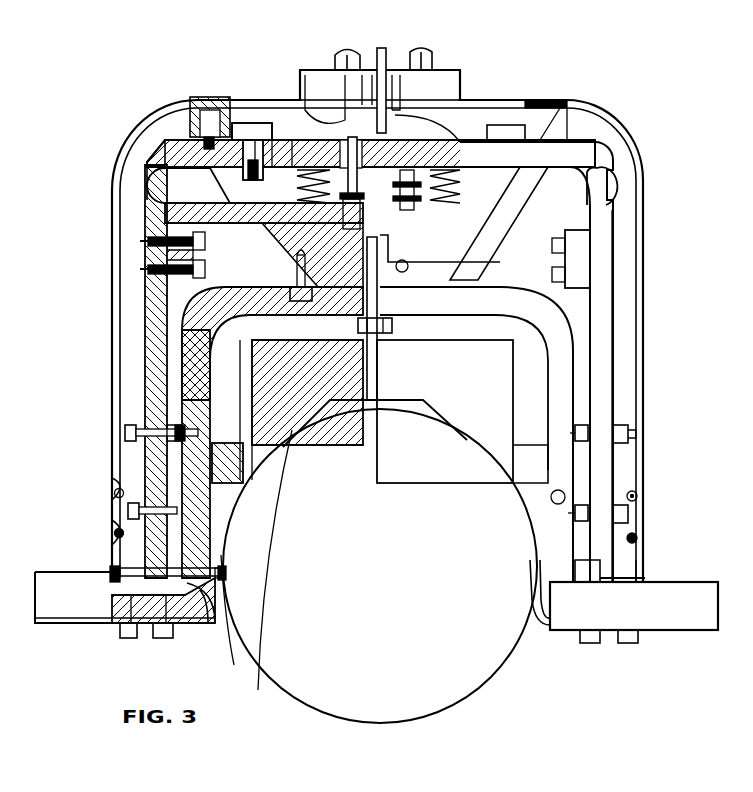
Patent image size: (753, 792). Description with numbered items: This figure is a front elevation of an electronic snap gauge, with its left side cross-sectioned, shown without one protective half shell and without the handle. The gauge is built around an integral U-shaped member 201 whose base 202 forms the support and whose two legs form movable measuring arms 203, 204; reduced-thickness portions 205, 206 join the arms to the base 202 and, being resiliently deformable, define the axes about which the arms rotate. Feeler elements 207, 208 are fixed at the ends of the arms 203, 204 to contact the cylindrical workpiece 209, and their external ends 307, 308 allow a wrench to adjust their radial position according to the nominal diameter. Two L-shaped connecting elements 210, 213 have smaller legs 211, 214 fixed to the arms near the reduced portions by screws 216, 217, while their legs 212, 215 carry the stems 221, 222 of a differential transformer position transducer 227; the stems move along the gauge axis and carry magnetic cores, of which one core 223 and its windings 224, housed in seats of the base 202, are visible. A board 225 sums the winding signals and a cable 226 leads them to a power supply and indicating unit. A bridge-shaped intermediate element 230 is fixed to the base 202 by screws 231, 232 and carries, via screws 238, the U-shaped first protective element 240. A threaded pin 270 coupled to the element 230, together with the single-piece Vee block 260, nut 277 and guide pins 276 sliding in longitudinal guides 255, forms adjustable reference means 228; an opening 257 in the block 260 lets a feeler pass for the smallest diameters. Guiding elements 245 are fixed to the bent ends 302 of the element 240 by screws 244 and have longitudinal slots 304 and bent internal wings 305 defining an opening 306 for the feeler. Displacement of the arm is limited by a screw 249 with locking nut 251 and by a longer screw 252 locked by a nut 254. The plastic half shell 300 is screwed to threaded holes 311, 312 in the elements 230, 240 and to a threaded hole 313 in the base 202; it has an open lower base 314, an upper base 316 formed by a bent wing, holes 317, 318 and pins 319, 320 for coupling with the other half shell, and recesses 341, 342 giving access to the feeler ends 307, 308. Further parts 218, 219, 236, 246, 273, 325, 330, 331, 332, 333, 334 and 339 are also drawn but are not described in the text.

The integral member 201 is at (585, 118).
The base 202 is at (525, 155).
The movable measuring arm 203 is at (145, 300).
The movable measuring arm 204 is at (600, 262).
The reduced thickness portion 205 is at (178, 200).
The reduced thickness portion 206 is at (613, 180).
The feeler element 207 is at (234, 665).
The feeler element 208 is at (600, 570).
The workpiece 209 is at (486, 658).
The connecting element 210 is at (147, 138).
The smaller leg 211 is at (150, 250).
The leg 212 is at (153, 158).
The connecting element 213 is at (580, 160).
The smaller leg 214 is at (578, 248).
The leg 215 is at (555, 140).
The screws 216 is at (205, 262).
The screws 217 is at (552, 275).
The plate element 218 is at (278, 140).
The strut 219 is at (450, 165).
The stem 221 is at (357, 180).
The stem 222 is at (395, 195).
The core 223 is at (350, 70).
The windings 224 is at (302, 140).
The board 225 is at (410, 125).
The cable 226 is at (386, 52).
The differential transformer position transducer 227 is at (402, 100).
The reference means 228 is at (400, 325).
The intermediate element 230 is at (565, 232).
The screw 231 is at (244, 123).
The screw 232 is at (505, 125).
The hatched body 236 is at (265, 225).
The screw 238 is at (305, 302).
The first protective element 240 is at (585, 392).
The screws 244 is at (162, 640).
The guiding element 245 is at (50, 640).
The recess 246 is at (120, 540).
The screw 249 is at (628, 512).
The locking nut 251 is at (590, 536).
The screw 252 is at (628, 434).
The nut 254 is at (582, 425).
The longitudinal guide 255 is at (252, 386).
The opening 257 is at (258, 692).
The Vee block 260 is at (500, 378).
The threaded pin 270 is at (565, 340).
The rod 273 is at (367, 316).
The guide pin 276 is at (222, 483).
The nut 277 is at (560, 290).
The half shell 300 is at (112, 272).
The bent end 302 is at (120, 610).
The longitudinal slot 304 is at (72, 624).
The bent internal wing 305 is at (215, 625).
The opening 306 is at (217, 566).
The external end 307 is at (110, 571).
The external end 308 is at (648, 582).
The threaded hole 311 is at (410, 266).
The threaded hole 312 is at (565, 497).
The threaded hole 313 is at (210, 135).
The lower base 314 is at (112, 572).
The upper base 316 is at (265, 130).
The hole 317 is at (114, 493).
The hole 318 is at (638, 538).
The pin 319 is at (114, 533).
The pin 320 is at (638, 496).
The insert 325 is at (210, 115).
The block 330 is at (192, 110).
The band 331 is at (552, 100).
The element 332 is at (366, 75).
The dome 333 is at (340, 56).
The nub 334 is at (428, 50).
The cup 339 is at (320, 100).
The recess 341 is at (112, 560).
The recess 342 is at (640, 575).